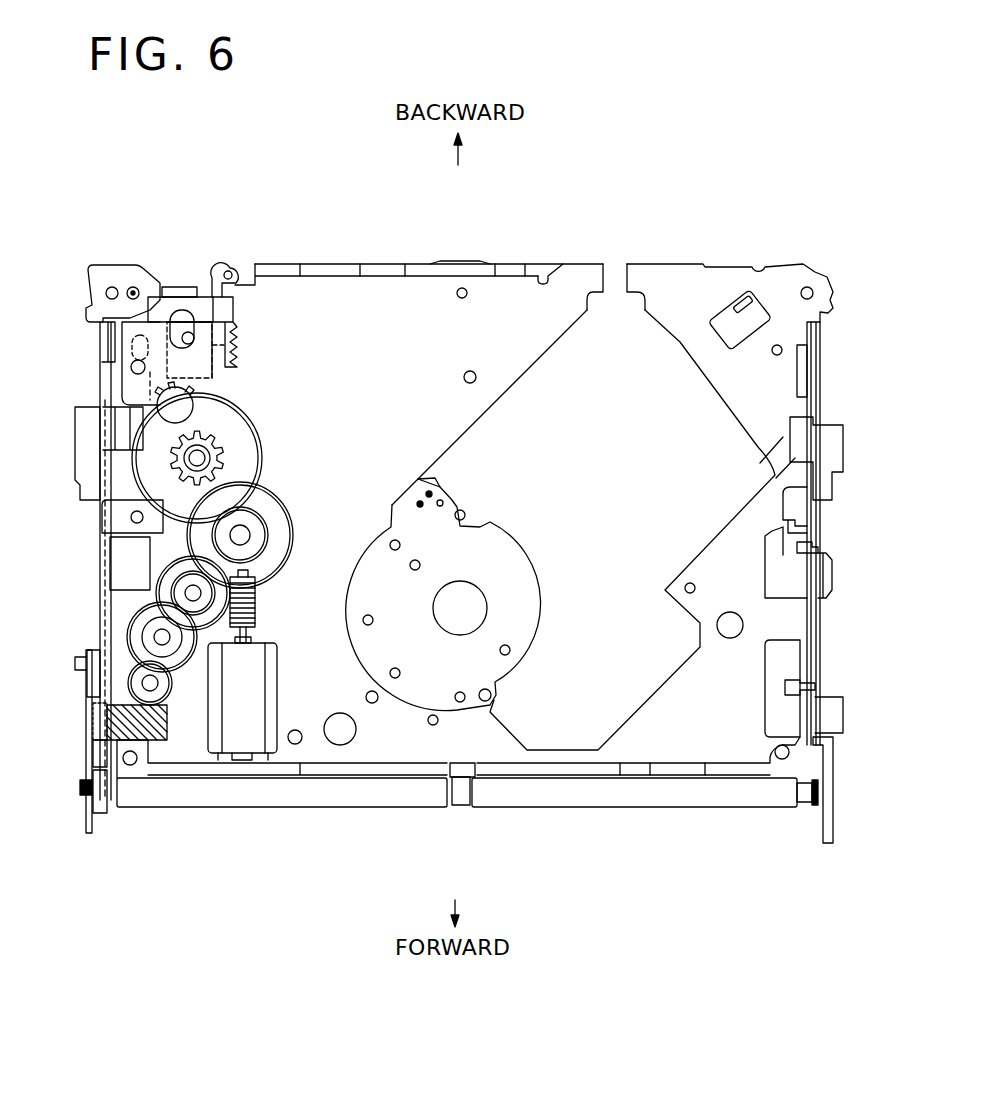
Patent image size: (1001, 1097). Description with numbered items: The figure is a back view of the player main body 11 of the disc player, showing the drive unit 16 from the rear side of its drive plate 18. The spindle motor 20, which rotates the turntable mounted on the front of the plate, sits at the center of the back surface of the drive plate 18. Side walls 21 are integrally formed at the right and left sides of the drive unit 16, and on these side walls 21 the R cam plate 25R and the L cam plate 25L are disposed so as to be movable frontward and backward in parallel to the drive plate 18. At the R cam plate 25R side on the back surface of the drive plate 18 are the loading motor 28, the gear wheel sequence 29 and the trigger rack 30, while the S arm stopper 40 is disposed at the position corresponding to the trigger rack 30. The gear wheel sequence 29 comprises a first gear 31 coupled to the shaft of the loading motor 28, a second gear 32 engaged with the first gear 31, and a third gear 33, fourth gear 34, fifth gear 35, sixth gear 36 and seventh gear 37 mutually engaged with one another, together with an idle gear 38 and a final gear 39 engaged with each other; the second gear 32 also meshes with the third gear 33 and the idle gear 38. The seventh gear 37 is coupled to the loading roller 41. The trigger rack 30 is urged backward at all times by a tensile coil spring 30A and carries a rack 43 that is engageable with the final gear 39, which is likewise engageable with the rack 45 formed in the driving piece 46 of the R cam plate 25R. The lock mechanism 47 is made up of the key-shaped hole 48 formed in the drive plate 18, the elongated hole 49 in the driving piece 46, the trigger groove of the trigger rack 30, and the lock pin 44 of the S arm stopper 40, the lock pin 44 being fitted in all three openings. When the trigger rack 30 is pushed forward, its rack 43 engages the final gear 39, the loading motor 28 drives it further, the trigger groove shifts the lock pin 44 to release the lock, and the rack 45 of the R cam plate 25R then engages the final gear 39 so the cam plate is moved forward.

The player main body 11 is at (662, 237).
The drive unit 16 is at (598, 250).
The drive plate 18 is at (490, 297).
The spindle motor 20 is at (476, 538).
The side walls 21 is at (815, 552).
The L cam plate 25L is at (828, 483).
The R cam plate 25R is at (88, 825).
The loading motor 28 is at (240, 748).
The gear wheel sequence 29 is at (304, 528).
The trigger rack 30 is at (187, 298).
The tensile coil spring 30A is at (228, 335).
The first gear 31 is at (255, 600).
The second gear 32 is at (163, 563).
The third gear 33 is at (135, 612).
The fourth gear 34 is at (128, 667).
The fifth gear 35 is at (100, 710).
The sixth gear 36 is at (95, 742).
The seventh gear 37 is at (90, 778).
The idle gear 38 is at (275, 510).
The final gear 39 is at (250, 423).
The S arm stopper 40 is at (147, 275).
The loading roller 41 is at (510, 800).
The rack 43 is at (262, 450).
The rack 45 is at (240, 420).
The lock pin 44 is at (225, 333).
The driving piece 46 is at (162, 282).
The lock mechanism 47 is at (240, 265).
The key-shaped hole 48 is at (183, 400).
The elongated hole 49 is at (197, 343).